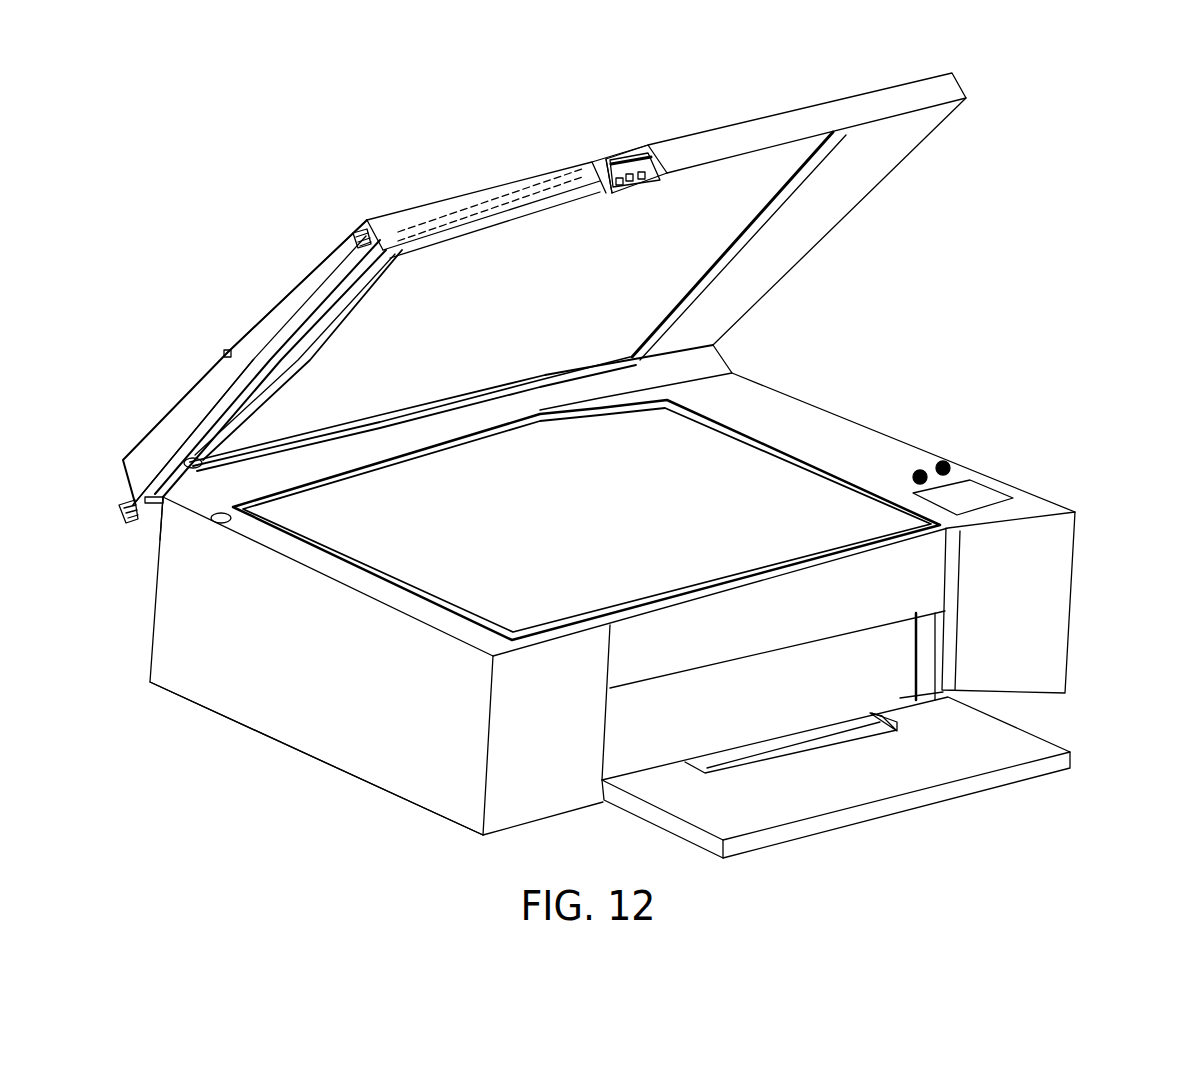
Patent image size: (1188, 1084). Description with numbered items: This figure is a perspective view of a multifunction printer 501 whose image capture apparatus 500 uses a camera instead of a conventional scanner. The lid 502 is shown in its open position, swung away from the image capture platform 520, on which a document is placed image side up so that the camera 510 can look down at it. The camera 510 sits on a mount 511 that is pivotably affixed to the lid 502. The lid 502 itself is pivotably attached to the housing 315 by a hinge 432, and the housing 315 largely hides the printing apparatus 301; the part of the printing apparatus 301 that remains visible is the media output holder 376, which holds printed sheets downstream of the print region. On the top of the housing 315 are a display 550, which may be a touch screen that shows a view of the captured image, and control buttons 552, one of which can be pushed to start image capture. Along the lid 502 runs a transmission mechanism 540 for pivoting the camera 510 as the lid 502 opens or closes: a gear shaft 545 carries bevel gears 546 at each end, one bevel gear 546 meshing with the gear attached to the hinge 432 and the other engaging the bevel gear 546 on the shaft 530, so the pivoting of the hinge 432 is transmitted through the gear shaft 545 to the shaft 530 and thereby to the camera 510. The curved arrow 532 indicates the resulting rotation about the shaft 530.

The image capture apparatus 500 is at (1034, 296).
The multifunction printer 501 is at (168, 112).
The lid 502 is at (878, 165).
The camera 510 is at (638, 190).
The mount 511 is at (627, 155).
The image capture platform 520 is at (735, 410).
The shaft 530 is at (500, 185).
The pivot axis rotation 532 is at (315, 243).
The transmission mechanism 540 is at (252, 288).
The gear shaft 545 is at (227, 393).
The bevel gears 546 is at (362, 232).
The display 550 is at (985, 495).
The control buttons 552 is at (945, 462).
The printing apparatus 301 is at (264, 764).
The housing 315 is at (265, 703).
The media output holder 376 is at (680, 797).
The hinge 432 is at (155, 523).